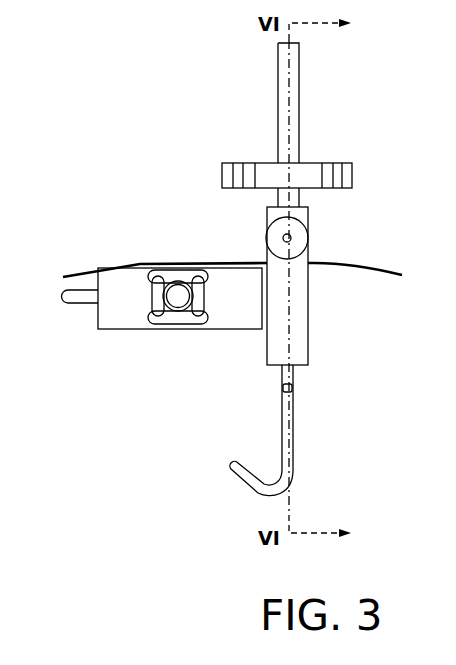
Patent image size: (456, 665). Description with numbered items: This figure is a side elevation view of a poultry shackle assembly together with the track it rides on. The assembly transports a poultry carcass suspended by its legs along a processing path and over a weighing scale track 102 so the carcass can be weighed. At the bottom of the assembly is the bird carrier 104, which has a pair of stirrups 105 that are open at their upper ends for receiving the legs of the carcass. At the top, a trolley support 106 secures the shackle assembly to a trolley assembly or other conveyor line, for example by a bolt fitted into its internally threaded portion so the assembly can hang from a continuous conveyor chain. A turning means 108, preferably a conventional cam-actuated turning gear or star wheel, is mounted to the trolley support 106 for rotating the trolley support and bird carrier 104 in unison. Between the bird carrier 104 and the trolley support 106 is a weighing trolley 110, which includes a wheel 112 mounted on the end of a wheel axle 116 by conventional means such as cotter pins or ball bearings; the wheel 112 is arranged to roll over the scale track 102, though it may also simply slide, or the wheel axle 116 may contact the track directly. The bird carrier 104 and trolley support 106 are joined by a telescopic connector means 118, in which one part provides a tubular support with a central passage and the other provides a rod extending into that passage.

The weighing scale track 102 is at (375, 267).
The bird carrier 104 is at (150, 418).
The stirrups 105 is at (233, 476).
The trolley support 106 is at (278, 108).
The turning means 108 is at (305, 175).
The weighing trolley 110 is at (153, 231).
The wheel 112 is at (307, 222).
The wheel axle 116 is at (292, 238).
The telescopic connector means 118 is at (338, 290).